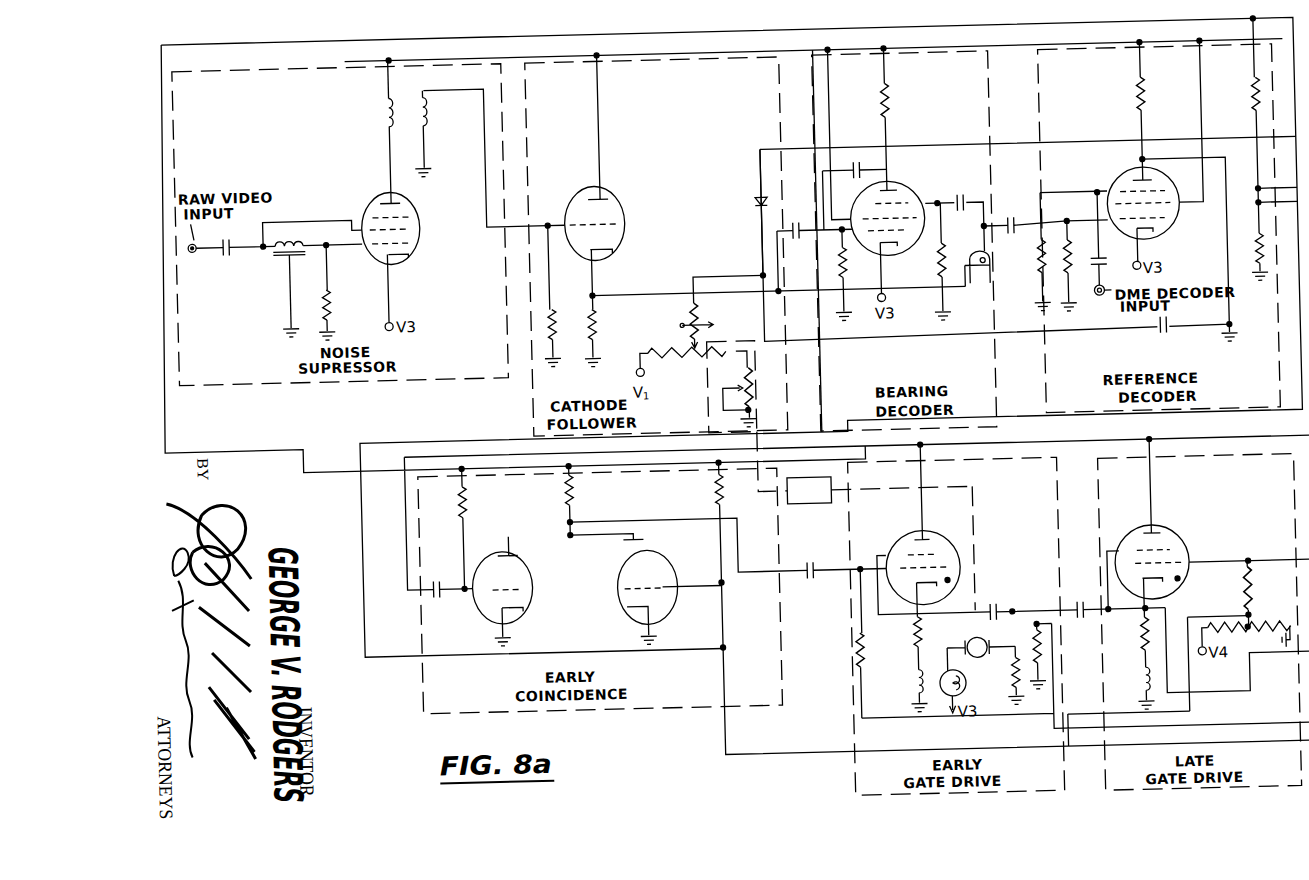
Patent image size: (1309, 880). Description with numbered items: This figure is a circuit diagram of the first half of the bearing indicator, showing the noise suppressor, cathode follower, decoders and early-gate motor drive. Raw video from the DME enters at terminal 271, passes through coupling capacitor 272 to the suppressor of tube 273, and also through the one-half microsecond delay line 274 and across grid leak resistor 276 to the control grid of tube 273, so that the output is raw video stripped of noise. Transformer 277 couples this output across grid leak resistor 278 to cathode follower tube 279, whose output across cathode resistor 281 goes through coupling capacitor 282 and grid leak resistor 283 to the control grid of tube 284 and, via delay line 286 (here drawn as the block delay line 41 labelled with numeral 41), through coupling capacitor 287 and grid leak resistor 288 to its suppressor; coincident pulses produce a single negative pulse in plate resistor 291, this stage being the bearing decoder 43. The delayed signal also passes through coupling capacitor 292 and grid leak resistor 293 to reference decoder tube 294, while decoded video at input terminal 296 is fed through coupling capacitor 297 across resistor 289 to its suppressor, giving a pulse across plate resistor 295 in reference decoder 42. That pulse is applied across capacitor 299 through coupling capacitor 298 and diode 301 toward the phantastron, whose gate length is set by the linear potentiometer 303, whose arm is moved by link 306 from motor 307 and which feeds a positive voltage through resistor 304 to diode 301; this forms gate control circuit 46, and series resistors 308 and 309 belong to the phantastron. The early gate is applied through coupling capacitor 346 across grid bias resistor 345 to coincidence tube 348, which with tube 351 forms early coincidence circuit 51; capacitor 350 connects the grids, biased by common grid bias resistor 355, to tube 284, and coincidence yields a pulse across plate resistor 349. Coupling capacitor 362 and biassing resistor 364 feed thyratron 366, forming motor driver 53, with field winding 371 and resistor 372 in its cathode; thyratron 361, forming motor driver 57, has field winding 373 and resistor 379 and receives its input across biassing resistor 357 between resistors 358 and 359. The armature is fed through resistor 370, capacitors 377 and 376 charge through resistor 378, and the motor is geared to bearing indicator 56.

The terminal 271 is at (197, 241).
The coupling capacitor 272 is at (240, 225).
The tube 273 is at (369, 246).
The one-half microsecond delay line 274 is at (277, 246).
The grid leak resistor 276 is at (337, 290).
The transformer 277 is at (421, 91).
The grid leak resistor 278 is at (557, 306).
The cathode follower tube 279 is at (593, 197).
The cathode resistor 281 is at (603, 323).
The coupling capacitor 282 is at (797, 241).
The grid leak resistor 283 is at (850, 262).
The tube 284 is at (899, 188).
The delay line 286 is at (995, 279).
The coupling capacitor 287 is at (965, 204).
The grid leak resistor 288 is at (943, 253).
The resistor 289 is at (1046, 250).
The plate resistor 291 is at (897, 116).
The coupling capacitor 292 is at (1017, 225).
The grid leak resistor 293 is at (1074, 248).
The reference decoder tube 294 is at (1174, 246).
The plate resistor 295 is at (1150, 99).
The input terminal 296 is at (1102, 306).
The coupling capacitor 297 is at (1114, 238).
The coupling capacitor 298 is at (1173, 333).
The capacitor 299 is at (1237, 337).
The diode 301 is at (759, 207).
The linear 360 degree potentiometer 303 is at (664, 357).
The resistor 304 is at (706, 321).
The link 306 is at (975, 527).
The motor 307 is at (962, 651).
The series resistor 308 is at (1261, 98).
The series resistor 309 is at (1260, 259).
The grid bias resistor 345 is at (466, 490).
The coupling capacitor 346 is at (437, 592).
The coincidence tube 348 is at (474, 617).
The plate resistor 349 is at (574, 489).
The capacitor 350 is at (864, 166).
The coincidence tube 351 is at (660, 562).
The common grid bias resistor 355 is at (712, 489).
The biassing resistor 357 is at (1240, 600).
The resistor 358 is at (1219, 625).
The resistor 359 is at (1270, 636).
The thyratron 361 is at (1130, 550).
The coupling capacitor 362 is at (806, 565).
The biassing resistor 364 is at (853, 662).
The thyratron 366 is at (896, 547).
The resistor 370 is at (1006, 684).
The motor field winding 371 is at (911, 688).
The resistor 372 is at (910, 647).
The motor field winding 373 is at (1138, 694).
The capacitor 376 is at (1073, 612).
The capacitor 377 is at (997, 602).
The resistor 378 is at (1030, 661).
The resistor 379 is at (1139, 643).
The delay line 41 is at (995, 253).
The decoder 42 is at (1166, 369).
The decoder 43 is at (923, 376).
The gate control circuit 46 is at (705, 403).
The coincidence circuit 51 is at (663, 675).
The motor driver 53 is at (1043, 781).
The bearing indicator 56 is at (818, 503).
The motor driver 57 is at (1278, 781).